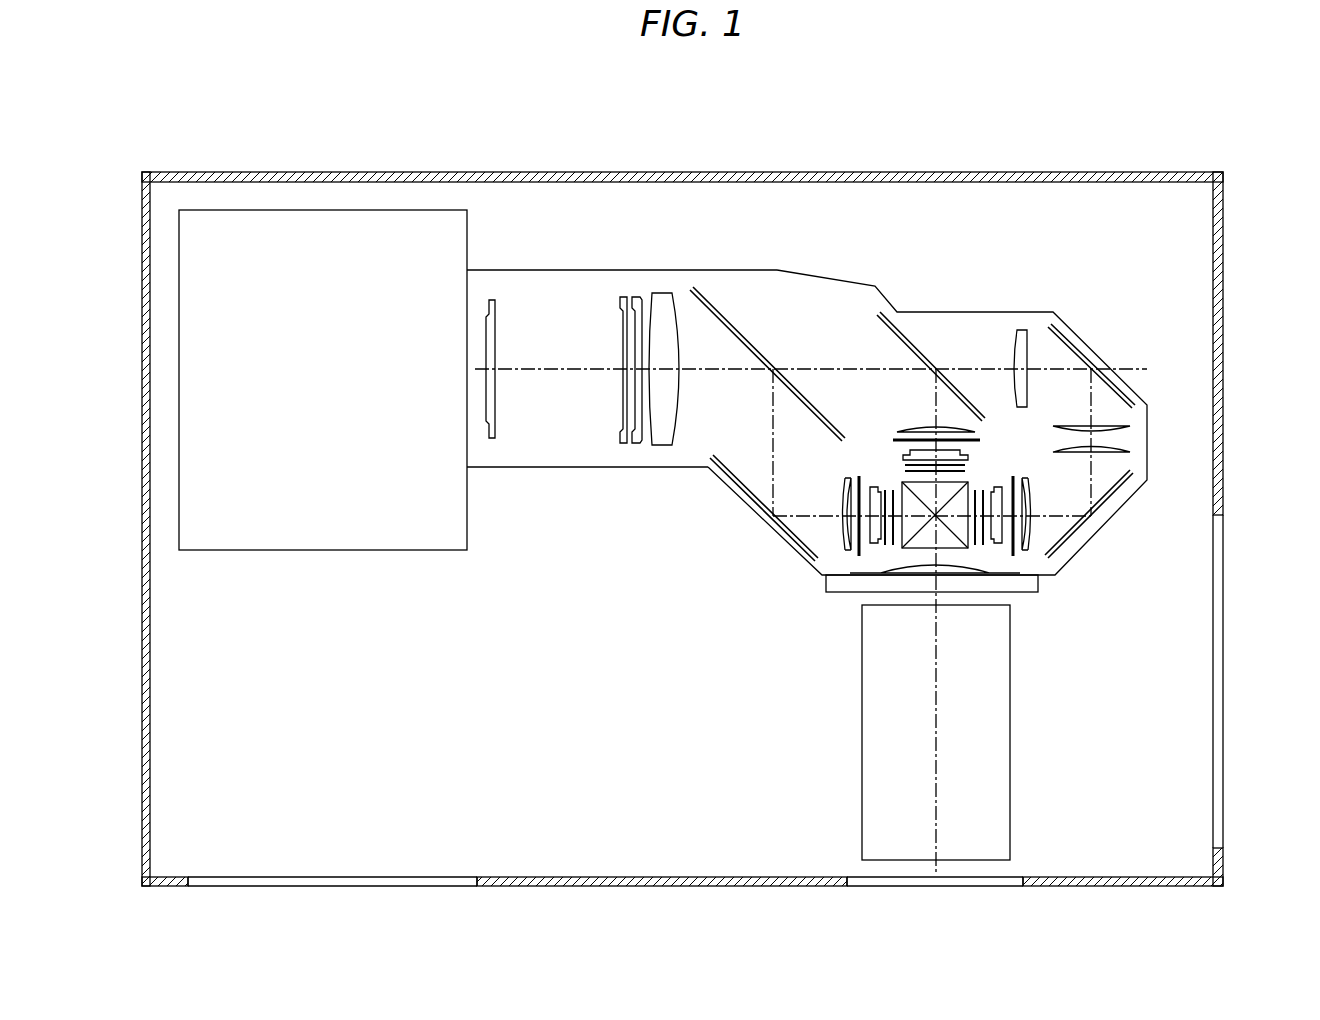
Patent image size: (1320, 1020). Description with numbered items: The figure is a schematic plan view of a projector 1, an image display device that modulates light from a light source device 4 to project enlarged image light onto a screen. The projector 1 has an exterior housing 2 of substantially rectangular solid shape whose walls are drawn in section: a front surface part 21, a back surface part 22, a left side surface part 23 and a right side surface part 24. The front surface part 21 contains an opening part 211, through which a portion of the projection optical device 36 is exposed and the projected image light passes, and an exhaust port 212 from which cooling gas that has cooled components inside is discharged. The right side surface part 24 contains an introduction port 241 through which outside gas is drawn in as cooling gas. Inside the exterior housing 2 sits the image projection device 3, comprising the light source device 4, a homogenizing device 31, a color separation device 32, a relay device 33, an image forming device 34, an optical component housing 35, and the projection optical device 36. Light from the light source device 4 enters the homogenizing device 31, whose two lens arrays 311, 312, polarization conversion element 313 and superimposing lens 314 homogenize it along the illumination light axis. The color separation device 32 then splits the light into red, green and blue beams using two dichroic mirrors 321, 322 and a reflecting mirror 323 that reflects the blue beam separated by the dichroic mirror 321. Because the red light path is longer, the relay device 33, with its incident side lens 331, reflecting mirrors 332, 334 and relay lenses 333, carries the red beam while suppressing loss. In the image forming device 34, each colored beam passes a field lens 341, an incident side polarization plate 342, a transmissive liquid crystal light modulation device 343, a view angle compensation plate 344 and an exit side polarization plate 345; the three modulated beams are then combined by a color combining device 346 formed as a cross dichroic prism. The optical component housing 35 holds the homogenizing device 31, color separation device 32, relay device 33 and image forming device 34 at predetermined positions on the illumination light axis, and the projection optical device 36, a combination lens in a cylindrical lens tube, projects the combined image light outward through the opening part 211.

The projector 1 is at (1266, 134).
The exterior housing 2 is at (1224, 312).
The front surface part 21 is at (682, 900).
The opening part 211 is at (847, 880).
The exhaust port 212 is at (477, 880).
The back surface part 22 is at (738, 172).
The left side surface part 23 is at (143, 462).
The right side surface part 24 is at (1246, 529).
The introduction port 241 is at (1222, 848).
The image projection device 3 is at (1096, 262).
The homogenizing device 31 is at (641, 455).
The lens array 311 is at (497, 340).
The lens array 312 is at (620, 425).
The polarization conversion element 313 is at (634, 298).
The superimposing lens 314 is at (672, 328).
The color separation device 32 is at (831, 294).
The dichroic mirror 321 is at (745, 312).
The dichroic mirror 322 is at (925, 350).
The reflecting mirror 323 is at (740, 470).
The relay device 33 is at (1101, 329).
The incident side lens 331 is at (1020, 330).
The reflecting mirror 332 is at (1110, 385).
The relay lenses 333 is at (1120, 445).
The reflecting mirror 334 is at (1105, 520).
The image forming device 34 is at (1026, 447).
The field lens 341 is at (925, 430).
The incident side polarization plate 342 is at (905, 440).
The light modulation device 343 is at (902, 480).
The view angle compensation plate 344 is at (905, 456).
The exit side polarization plate 345 is at (945, 470).
The color combining device 346 is at (943, 550).
The optical component housing 35 is at (945, 312).
The projection optical device 36 is at (1010, 740).
The light source device 4 is at (383, 210).